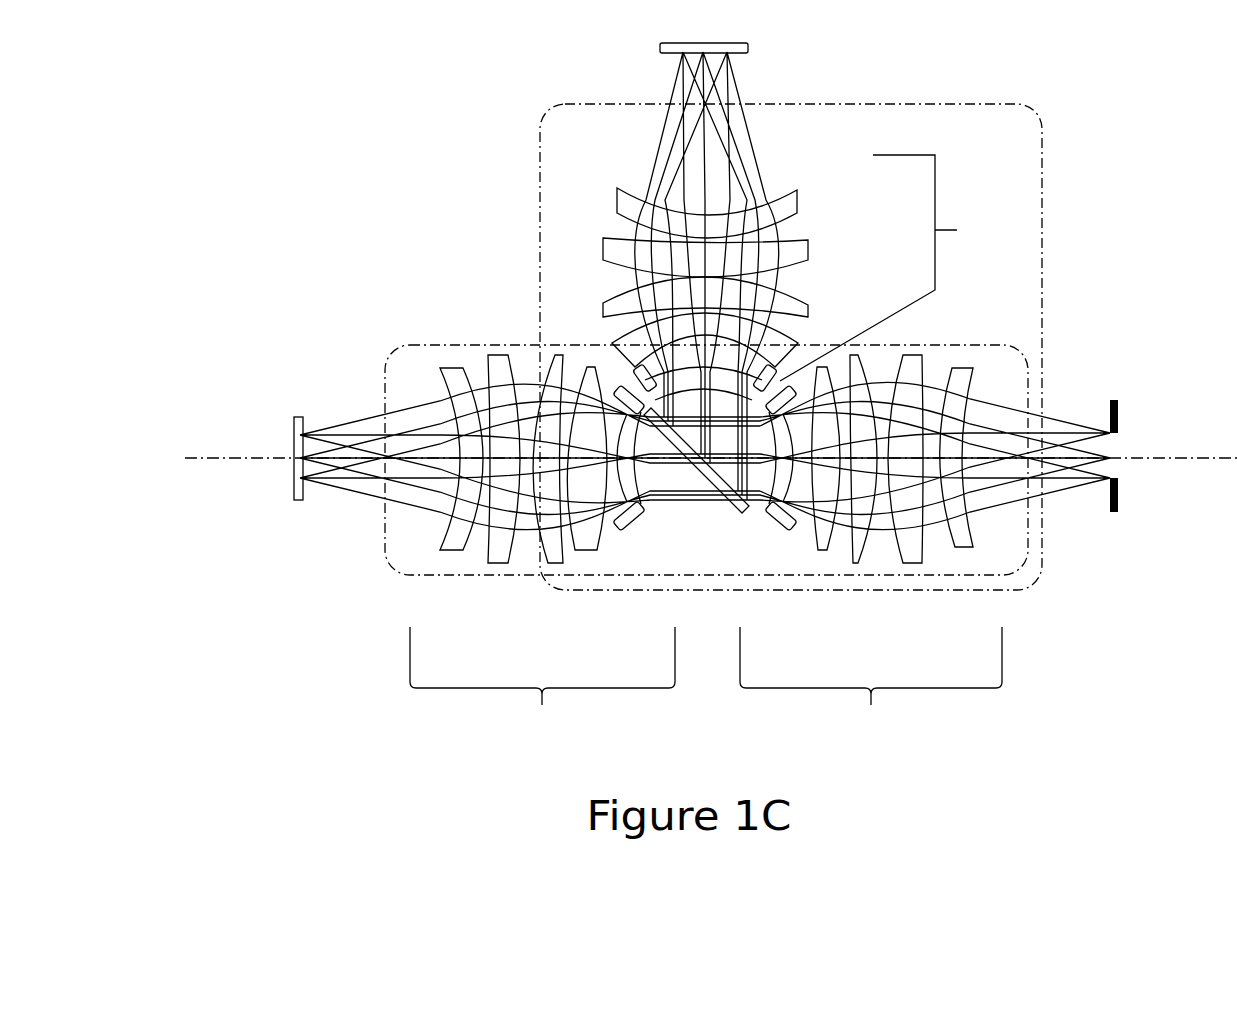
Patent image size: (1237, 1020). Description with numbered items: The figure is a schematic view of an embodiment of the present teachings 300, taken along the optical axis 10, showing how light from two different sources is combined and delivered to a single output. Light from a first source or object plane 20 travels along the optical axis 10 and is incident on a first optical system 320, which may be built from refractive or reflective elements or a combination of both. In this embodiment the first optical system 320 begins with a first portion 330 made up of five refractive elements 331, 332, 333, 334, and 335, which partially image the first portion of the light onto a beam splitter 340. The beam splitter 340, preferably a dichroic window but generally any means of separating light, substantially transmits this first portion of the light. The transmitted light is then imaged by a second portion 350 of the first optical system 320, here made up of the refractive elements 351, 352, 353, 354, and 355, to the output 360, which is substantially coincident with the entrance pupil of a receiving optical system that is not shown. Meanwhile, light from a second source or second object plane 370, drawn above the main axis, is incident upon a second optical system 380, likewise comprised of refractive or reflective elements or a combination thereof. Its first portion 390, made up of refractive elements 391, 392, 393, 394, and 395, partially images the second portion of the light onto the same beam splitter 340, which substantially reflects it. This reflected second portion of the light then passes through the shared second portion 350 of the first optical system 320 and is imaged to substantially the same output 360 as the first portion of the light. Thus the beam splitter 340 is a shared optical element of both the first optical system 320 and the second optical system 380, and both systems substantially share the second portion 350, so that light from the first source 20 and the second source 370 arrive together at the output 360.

The optical axis 10 is at (228, 462).
The first source or object plane 20 is at (297, 502).
The embodiment of the present teachings 300 is at (276, 301).
The first optical system 320 is at (385, 345).
The first portion of the first optical system 330 is at (542, 686).
The refractive element 331 is at (440, 550).
The refractive element 332 is at (490, 563).
The refractive element 333 is at (552, 563).
The refractive element 334 is at (585, 550).
The refractive element 335 is at (625, 530).
The beam splitter 340 is at (728, 528).
The second portion of the first optical system 350 is at (871, 686).
The refractive element 351 is at (962, 547).
The refractive element 352 is at (915, 563).
The refractive element 353 is at (855, 563).
The refractive element 354 is at (822, 550).
The refractive element 355 is at (785, 530).
The output 360 is at (1115, 513).
The second source or second object plane 370 is at (750, 48).
The second optical system 380 is at (907, 103).
The first portion of the second optical system 390 is at (891, 268).
The refractive element 391 is at (797, 207).
The refractive element 392 is at (808, 242).
The refractive element 393 is at (796, 302).
The refractive element 394 is at (800, 340).
The refractive element 395 is at (777, 377).